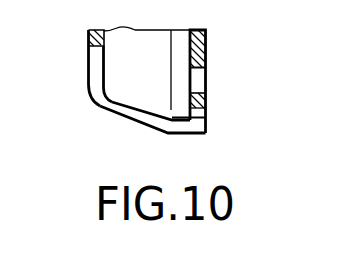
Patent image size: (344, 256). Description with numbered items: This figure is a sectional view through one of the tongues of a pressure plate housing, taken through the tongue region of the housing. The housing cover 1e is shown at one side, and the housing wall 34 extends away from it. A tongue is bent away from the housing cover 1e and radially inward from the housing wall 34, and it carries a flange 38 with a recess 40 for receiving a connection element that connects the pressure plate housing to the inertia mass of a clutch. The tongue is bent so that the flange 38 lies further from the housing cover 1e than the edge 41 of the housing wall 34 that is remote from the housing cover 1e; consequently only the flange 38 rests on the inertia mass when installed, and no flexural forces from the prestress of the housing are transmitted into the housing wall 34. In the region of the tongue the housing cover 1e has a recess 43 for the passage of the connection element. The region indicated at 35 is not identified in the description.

The housing cover 1e is at (164, 88).
The edge of the housing wall 41 is at (177, 45).
The side wall 35 is at (226, 75).
The flange 38 is at (205, 60).
The recess 40 is at (200, 84).
The recess 43 is at (98, 100).
The housing wall 34 is at (139, 123).